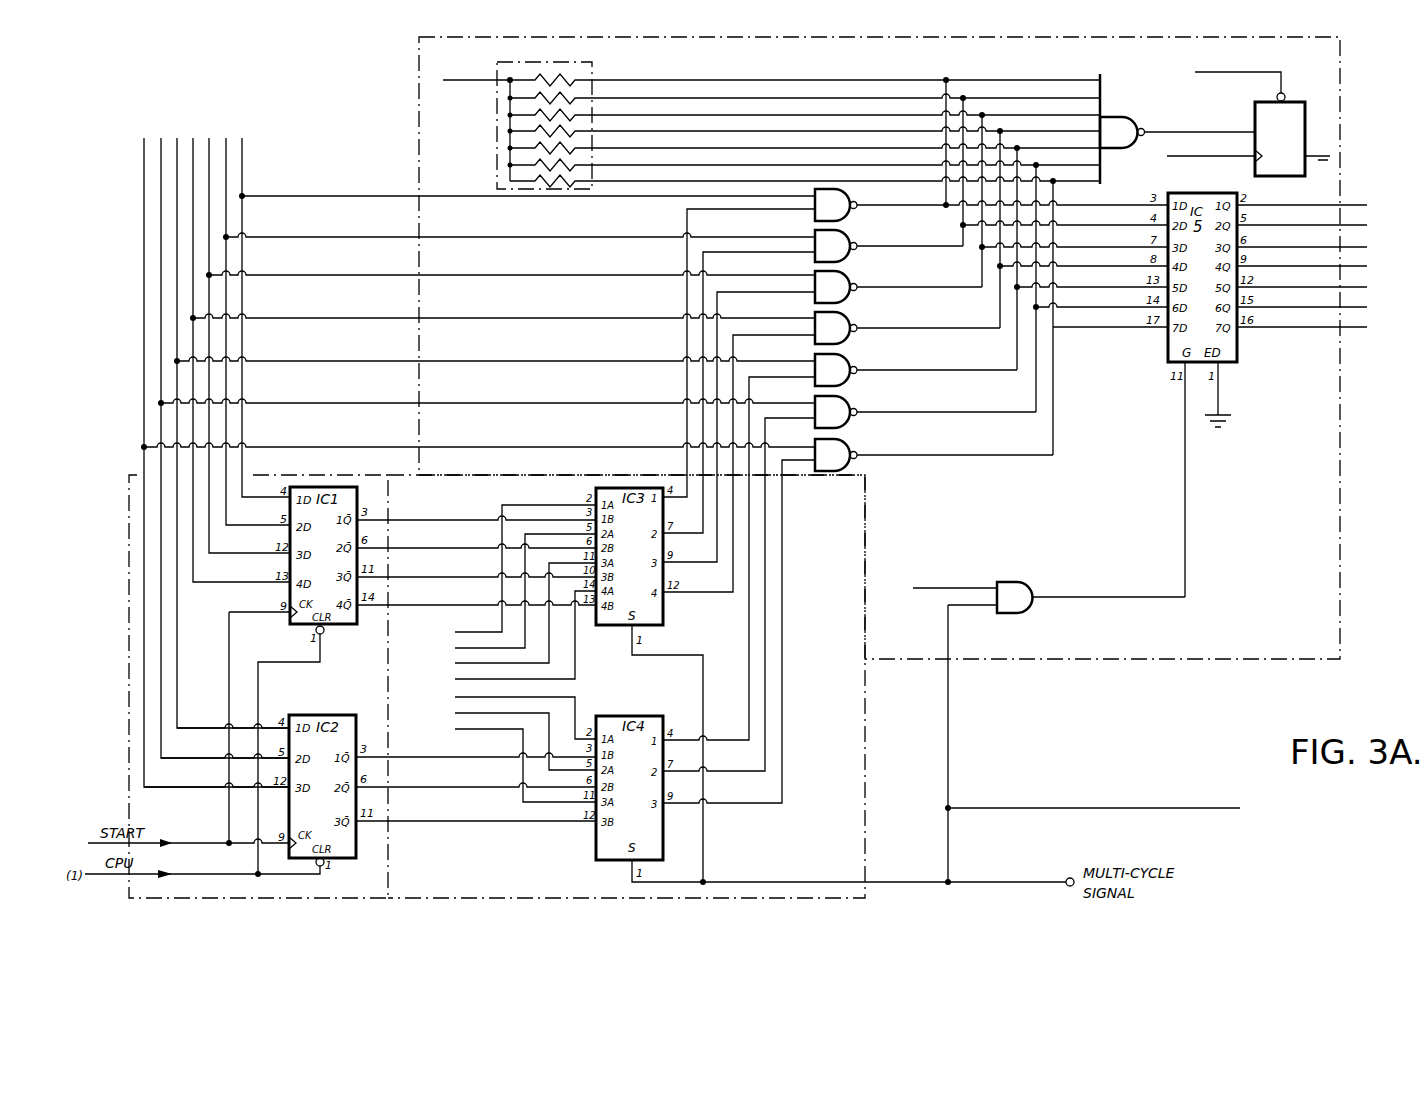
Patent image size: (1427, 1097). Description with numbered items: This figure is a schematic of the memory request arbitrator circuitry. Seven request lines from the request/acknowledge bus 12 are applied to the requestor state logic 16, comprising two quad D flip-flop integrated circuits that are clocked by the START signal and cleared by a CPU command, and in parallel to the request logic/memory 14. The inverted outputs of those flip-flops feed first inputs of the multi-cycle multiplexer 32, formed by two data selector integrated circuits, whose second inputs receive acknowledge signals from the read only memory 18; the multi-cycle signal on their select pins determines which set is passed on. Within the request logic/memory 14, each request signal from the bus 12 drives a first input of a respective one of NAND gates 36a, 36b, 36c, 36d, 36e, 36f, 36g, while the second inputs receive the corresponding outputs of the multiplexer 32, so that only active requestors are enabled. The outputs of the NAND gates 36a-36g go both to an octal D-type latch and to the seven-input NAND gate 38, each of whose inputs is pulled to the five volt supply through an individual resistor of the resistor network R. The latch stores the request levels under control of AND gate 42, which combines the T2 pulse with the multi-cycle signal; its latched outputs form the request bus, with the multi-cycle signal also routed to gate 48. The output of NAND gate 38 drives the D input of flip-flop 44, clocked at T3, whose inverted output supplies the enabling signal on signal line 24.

The request/acknowledge bus 12 is at (257, 126).
The request logic/memory 14 is at (1095, 662).
The requestor state logic 16 is at (129, 666).
The read only memory 18 is at (455, 620).
The signal line 24 is at (1312, 168).
The multi-cycle multiplexer 32 is at (866, 795).
The NAND gate 36a is at (852, 214).
The NAND gate 36b is at (852, 255).
The NAND gate 36c is at (852, 296).
The NAND gate 36d is at (852, 337).
The NAND gate 36e is at (852, 379).
The NAND gate 36f is at (852, 421).
The NAND gate 36g is at (852, 464).
The NAND gate 38 is at (1108, 118).
The AND gate 42 is at (1026, 584).
The D type flip-flop 44 is at (1298, 178).
The gate 48 is at (1092, 800).
The resistor network R is at (497, 122).